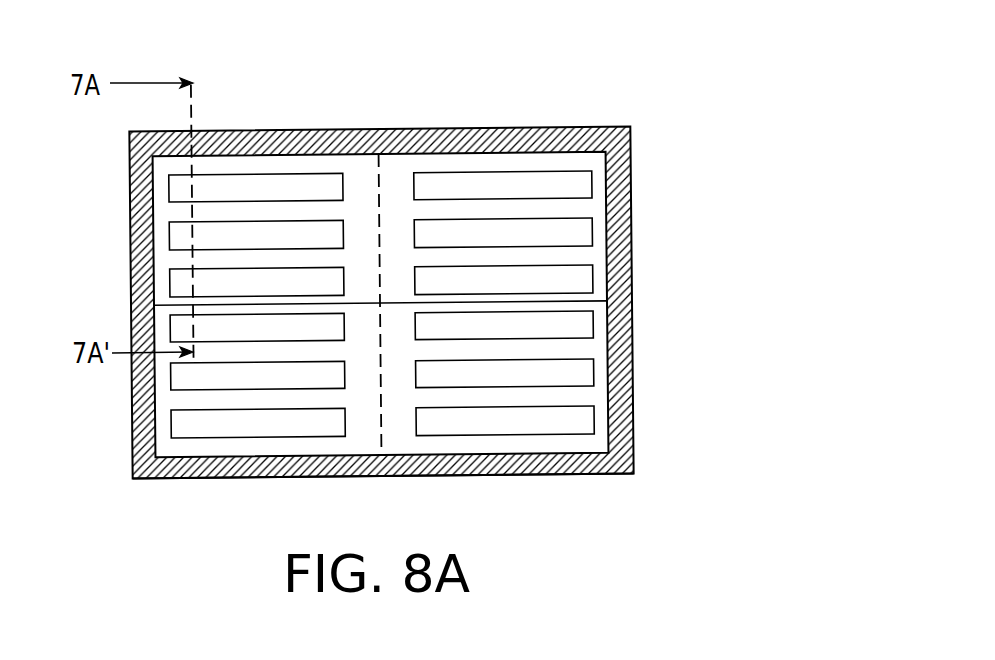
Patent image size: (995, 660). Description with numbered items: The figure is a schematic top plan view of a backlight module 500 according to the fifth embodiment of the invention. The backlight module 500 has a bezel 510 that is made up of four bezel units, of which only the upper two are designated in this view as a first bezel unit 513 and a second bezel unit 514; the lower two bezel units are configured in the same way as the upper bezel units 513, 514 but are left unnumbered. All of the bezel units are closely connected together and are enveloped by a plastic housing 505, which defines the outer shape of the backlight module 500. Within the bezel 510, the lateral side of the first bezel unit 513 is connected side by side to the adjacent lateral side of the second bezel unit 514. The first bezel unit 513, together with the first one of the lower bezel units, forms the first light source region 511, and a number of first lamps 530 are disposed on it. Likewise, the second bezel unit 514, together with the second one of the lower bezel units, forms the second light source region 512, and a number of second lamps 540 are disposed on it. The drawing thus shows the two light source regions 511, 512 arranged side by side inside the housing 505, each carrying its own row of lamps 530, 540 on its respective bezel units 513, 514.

The backlight module 500 is at (733, 36).
The plastic housing 505 is at (632, 462).
The bezel 510 is at (632, 135).
The first light source region 511 is at (184, 240).
The second light source region 512 is at (576, 238).
The first bezel unit 513 is at (172, 256).
The second bezel unit 514 is at (590, 250).
The first lamps 530 is at (175, 183).
The second lamps 540 is at (575, 181).